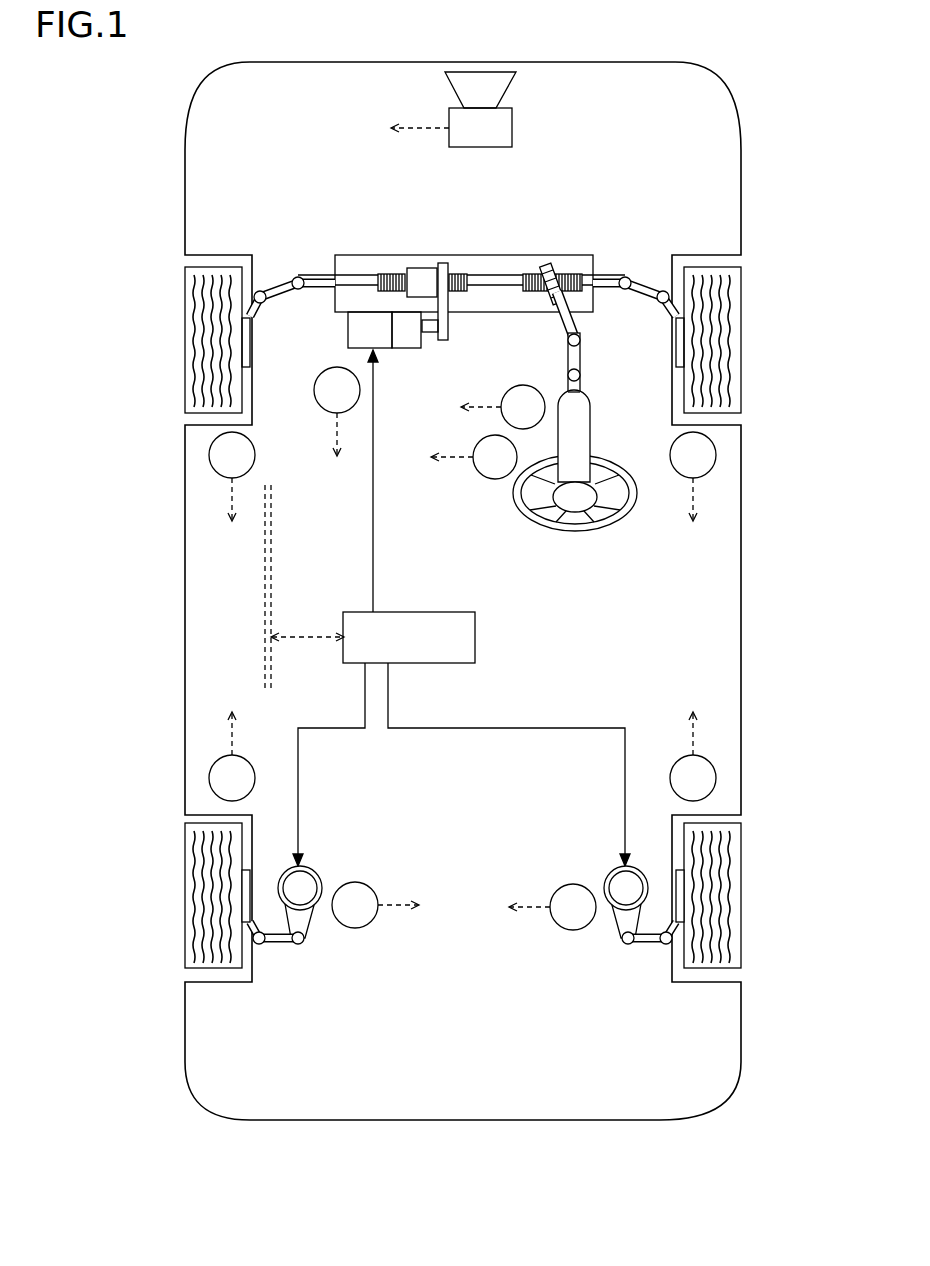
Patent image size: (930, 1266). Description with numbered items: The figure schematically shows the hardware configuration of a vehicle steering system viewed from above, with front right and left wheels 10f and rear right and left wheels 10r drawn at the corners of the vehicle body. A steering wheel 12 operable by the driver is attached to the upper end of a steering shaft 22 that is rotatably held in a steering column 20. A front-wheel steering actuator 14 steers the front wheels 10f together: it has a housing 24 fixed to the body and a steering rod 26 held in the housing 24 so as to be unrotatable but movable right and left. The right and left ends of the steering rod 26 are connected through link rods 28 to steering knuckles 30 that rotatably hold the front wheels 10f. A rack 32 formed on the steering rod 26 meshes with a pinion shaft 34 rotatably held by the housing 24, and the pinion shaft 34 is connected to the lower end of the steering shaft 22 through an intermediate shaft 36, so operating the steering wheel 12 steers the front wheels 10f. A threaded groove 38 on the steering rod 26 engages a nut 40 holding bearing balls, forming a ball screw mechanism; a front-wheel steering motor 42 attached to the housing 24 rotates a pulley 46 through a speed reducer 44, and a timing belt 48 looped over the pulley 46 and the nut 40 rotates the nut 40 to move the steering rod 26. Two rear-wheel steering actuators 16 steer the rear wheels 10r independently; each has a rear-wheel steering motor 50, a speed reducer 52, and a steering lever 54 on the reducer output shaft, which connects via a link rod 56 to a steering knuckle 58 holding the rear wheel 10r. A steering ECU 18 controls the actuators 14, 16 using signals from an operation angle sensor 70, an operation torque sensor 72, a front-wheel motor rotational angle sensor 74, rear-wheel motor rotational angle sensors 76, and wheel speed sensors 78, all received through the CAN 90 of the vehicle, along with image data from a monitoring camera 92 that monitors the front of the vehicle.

The front right and left wheels 10f is at (185, 302).
The rear right and left wheels 10r is at (185, 857).
The steering wheel 12 is at (618, 522).
The front-wheel steering actuator 14 is at (565, 224).
The rear-wheel steering actuators 16 is at (325, 846).
The steering electronic control unit 18 is at (455, 612).
The steering column 20 is at (585, 410).
The steering shaft 22 is at (584, 386).
The housing 24 is at (478, 258).
The steering rod 26 is at (522, 262).
The link rods 28 is at (287, 280).
The steering knuckles 30 is at (250, 336).
The rack 32 is at (551, 272).
The pinion shaft 34 is at (561, 315).
The intermediate shaft 36 is at (581, 358).
The threaded groove 38 is at (388, 270).
The nut 40 is at (418, 268).
The front-wheel steering motor 42 is at (352, 322).
The speed reducer 44 is at (405, 346).
The pulley 46 is at (428, 334).
The timing belt 48 is at (444, 342).
The rear-wheel steering motor 50 is at (305, 880).
The speed reducer 52 is at (320, 918).
The steering lever 54 is at (308, 945).
The link rod 56 is at (272, 948).
The steering knuckle 58 is at (250, 882).
The operation angle sensor 70 is at (480, 472).
The operation torque sensor 72 is at (514, 390).
The front-wheel motor rotational angle sensor 74 is at (323, 405).
The rear-wheel motor rotational angle sensors 76 is at (373, 890).
The wheel speed sensors 78 is at (222, 476).
The CAN 90 is at (273, 521).
The monitoring camera 92 is at (512, 126).